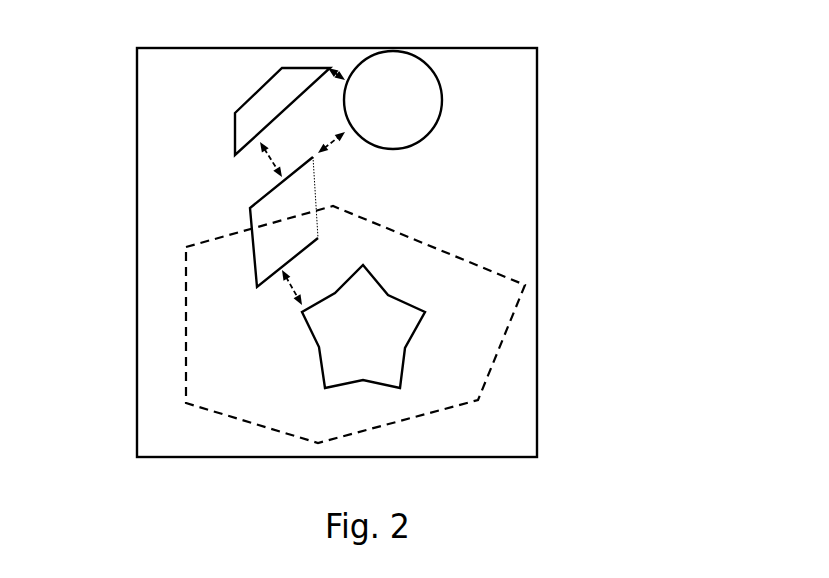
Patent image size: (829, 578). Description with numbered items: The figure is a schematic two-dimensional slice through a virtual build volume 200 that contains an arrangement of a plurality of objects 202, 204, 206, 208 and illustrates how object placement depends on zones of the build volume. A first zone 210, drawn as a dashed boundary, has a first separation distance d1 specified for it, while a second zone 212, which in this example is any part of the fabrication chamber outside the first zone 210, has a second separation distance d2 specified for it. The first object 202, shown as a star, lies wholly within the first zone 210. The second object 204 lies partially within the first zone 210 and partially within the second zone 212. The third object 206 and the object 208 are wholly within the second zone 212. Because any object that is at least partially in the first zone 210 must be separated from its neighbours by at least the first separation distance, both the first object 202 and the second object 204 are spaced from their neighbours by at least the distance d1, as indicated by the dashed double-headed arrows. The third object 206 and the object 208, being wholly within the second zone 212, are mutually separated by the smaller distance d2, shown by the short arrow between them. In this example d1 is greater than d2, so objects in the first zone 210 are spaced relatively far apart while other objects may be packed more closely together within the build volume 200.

The virtual build volume 200 is at (556, 131).
The first object 202 is at (383, 347).
The second object 204 is at (303, 221).
The third object 206 is at (238, 106).
The object 208 is at (418, 108).
The first zone 210 is at (186, 397).
The second zone 212 is at (179, 124).
The first separation distance d1 is at (268, 164).
The second separation distance d2 is at (337, 74).